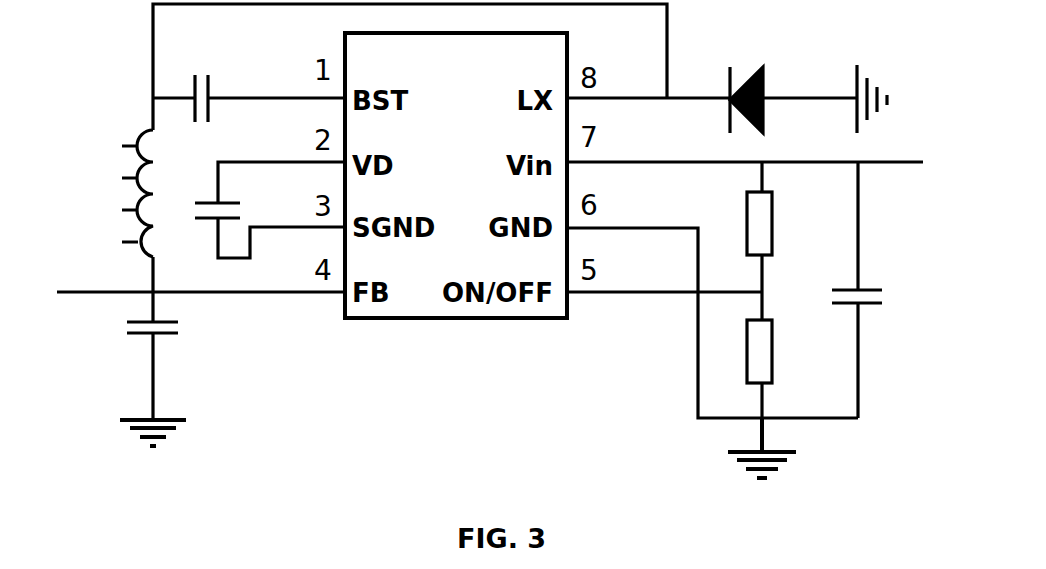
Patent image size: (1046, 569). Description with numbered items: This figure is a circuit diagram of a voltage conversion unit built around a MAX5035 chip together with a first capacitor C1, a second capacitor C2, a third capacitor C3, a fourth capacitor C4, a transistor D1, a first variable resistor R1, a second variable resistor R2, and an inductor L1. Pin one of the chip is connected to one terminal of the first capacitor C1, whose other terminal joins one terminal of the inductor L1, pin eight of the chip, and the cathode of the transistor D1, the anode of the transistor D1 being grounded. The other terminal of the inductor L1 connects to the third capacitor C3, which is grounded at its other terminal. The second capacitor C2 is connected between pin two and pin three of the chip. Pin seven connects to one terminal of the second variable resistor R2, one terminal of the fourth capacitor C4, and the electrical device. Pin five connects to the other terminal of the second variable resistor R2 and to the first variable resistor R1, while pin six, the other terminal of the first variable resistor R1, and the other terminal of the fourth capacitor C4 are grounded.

The first capacitor C1 is at (249, 78).
The second capacitor C2 is at (256, 210).
The third capacitor C3 is at (176, 342).
The fourth capacitor C4 is at (882, 290).
The inductor L1 is at (112, 193).
The transistor D1 is at (808, 78).
The first variable resistor R1 is at (782, 369).
The second variable resistor R2 is at (782, 241).